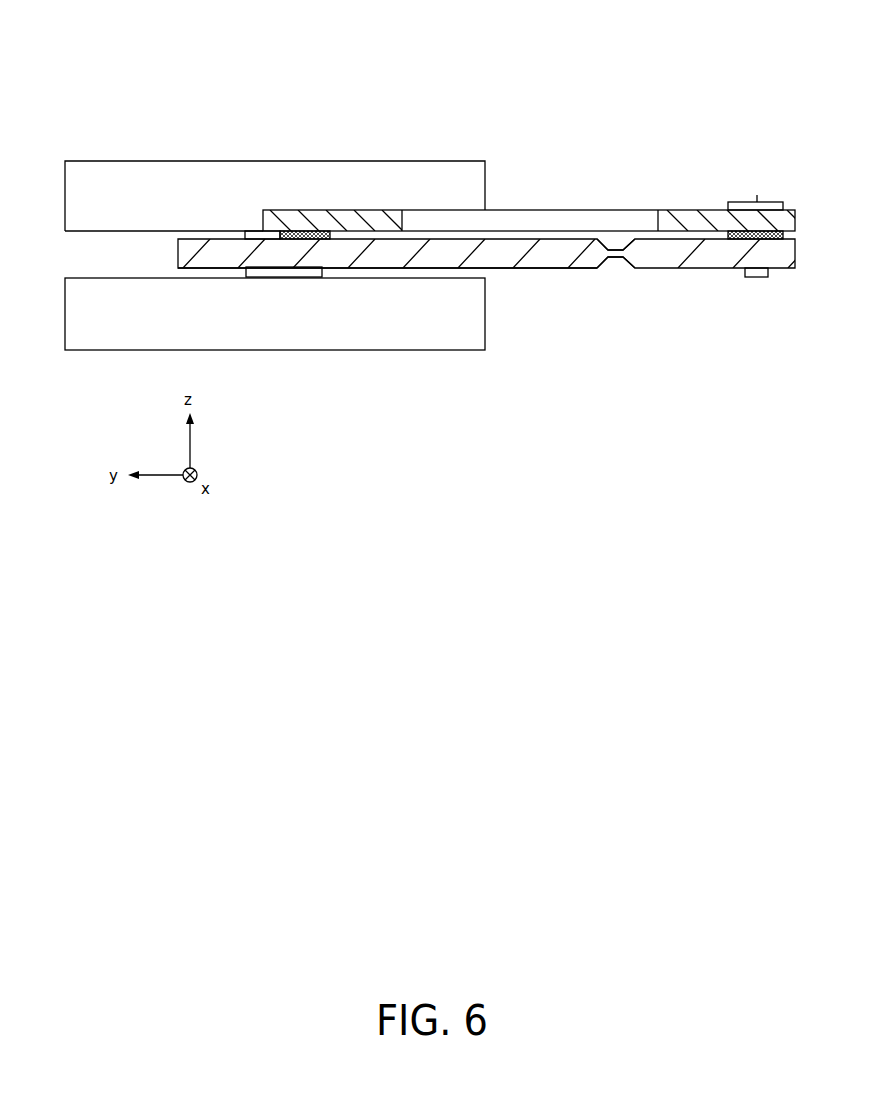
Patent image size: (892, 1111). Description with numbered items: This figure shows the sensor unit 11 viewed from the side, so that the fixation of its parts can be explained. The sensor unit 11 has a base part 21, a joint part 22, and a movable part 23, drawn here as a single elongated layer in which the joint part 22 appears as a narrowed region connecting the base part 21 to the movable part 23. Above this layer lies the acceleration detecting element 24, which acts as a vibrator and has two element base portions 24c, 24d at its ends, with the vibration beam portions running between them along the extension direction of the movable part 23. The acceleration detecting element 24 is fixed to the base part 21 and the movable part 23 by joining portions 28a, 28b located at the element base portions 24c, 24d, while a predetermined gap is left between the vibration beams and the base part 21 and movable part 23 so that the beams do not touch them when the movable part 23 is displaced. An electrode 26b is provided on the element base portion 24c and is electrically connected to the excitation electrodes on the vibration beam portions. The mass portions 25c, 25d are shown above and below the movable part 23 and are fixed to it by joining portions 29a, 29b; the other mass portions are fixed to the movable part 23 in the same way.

The sensor unit 11 is at (433, 76).
The base part 21 is at (672, 268).
The joint part 22 is at (620, 257).
The movable part 23 is at (527, 268).
The acceleration detecting element 24 is at (535, 167).
The element base portion 24c is at (672, 210).
The element base portion 24d is at (342, 210).
The mass portion 25c is at (87, 162).
The mass portion 25d is at (87, 350).
The electrode 26b is at (740, 202).
The joining portion 28a is at (771, 239).
The joining portion 28b is at (331, 239).
The joining portion 29a is at (250, 231).
The joining portion 29b is at (253, 277).